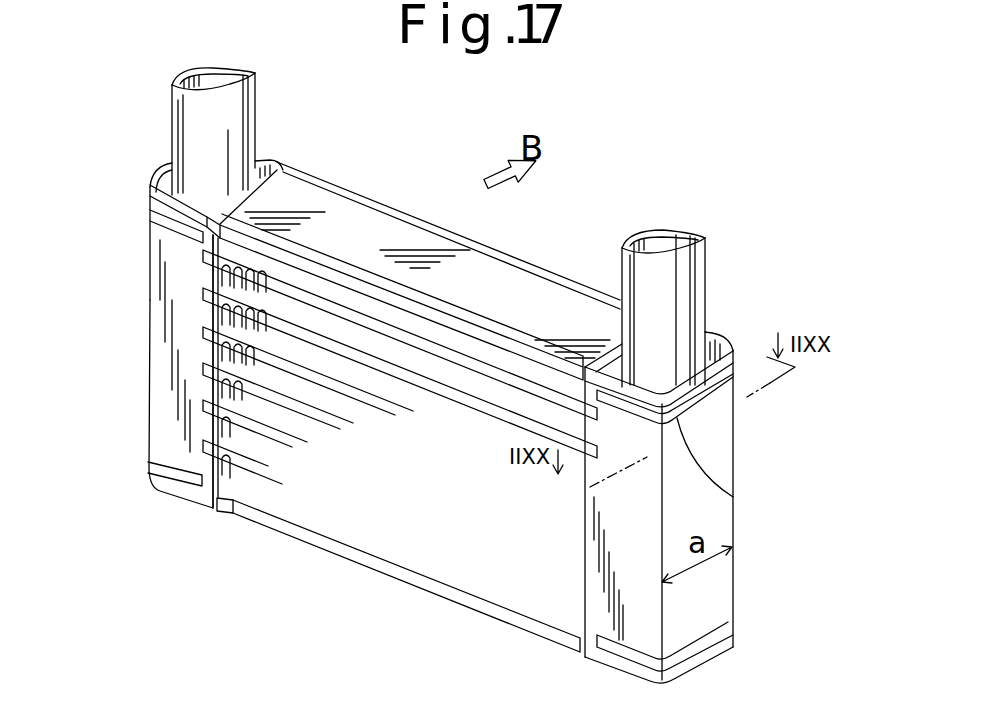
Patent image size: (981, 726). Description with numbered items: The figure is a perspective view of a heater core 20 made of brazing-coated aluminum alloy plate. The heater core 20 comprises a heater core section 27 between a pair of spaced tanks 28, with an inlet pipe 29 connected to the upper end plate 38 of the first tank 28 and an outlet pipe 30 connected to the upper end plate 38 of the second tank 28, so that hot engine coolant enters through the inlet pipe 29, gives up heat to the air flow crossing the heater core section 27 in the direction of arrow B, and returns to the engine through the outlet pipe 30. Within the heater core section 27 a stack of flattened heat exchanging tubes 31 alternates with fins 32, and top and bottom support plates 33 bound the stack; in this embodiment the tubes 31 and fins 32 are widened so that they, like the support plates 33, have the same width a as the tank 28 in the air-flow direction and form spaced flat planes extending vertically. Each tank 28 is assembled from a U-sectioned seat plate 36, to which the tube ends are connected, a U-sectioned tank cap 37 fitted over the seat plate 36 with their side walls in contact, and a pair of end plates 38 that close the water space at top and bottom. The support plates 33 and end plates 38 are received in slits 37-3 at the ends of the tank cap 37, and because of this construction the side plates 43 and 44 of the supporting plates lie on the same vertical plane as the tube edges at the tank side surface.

The heater core 20 is at (564, 232).
The heater core section 27 is at (397, 417).
The tank 28 is at (443, 419).
The inlet pipe 29 is at (240, 122).
The outlet pipe 30 is at (688, 272).
The heat exchanging tube 31 is at (257, 463).
The fin 32 is at (232, 503).
The support plate 33 is at (343, 225).
The seat plate 36 is at (157, 238).
The tank cap 37 is at (148, 366).
The slit 37-3 is at (735, 497).
The end plate 38 is at (157, 213).
The side plate 43 is at (507, 253).
The side plate 44 is at (383, 283).